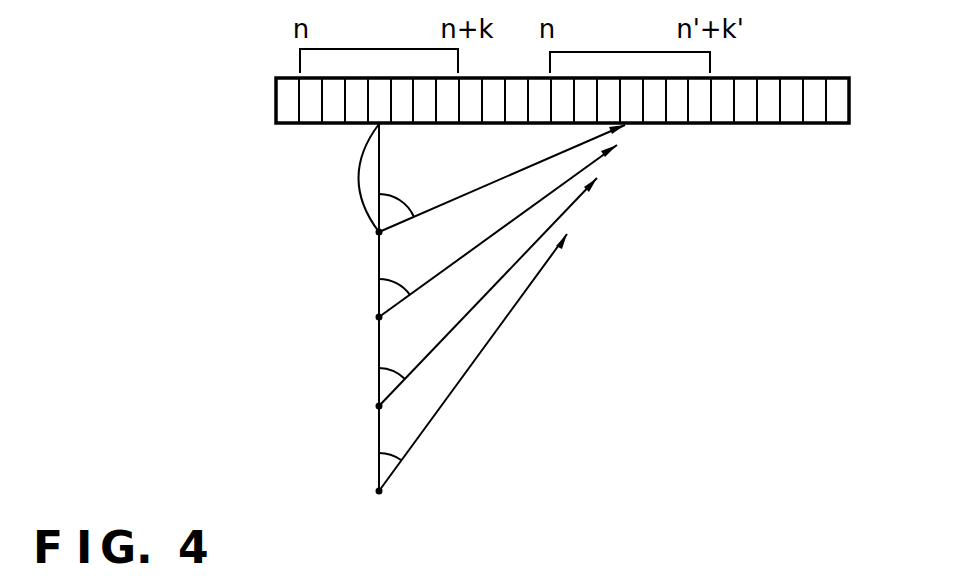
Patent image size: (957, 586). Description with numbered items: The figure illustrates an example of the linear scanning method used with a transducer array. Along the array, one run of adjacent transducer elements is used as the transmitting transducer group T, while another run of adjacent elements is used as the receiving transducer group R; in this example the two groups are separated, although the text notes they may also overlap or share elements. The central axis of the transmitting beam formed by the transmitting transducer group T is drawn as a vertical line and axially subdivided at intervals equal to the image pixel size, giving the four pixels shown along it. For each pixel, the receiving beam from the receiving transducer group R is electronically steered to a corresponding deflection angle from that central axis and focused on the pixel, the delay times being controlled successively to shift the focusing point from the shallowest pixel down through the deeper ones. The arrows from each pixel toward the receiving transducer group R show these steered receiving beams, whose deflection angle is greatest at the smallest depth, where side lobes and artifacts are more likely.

The transmitting transducer group T is at (379, 43).
The receiving transducer group R is at (630, 43).